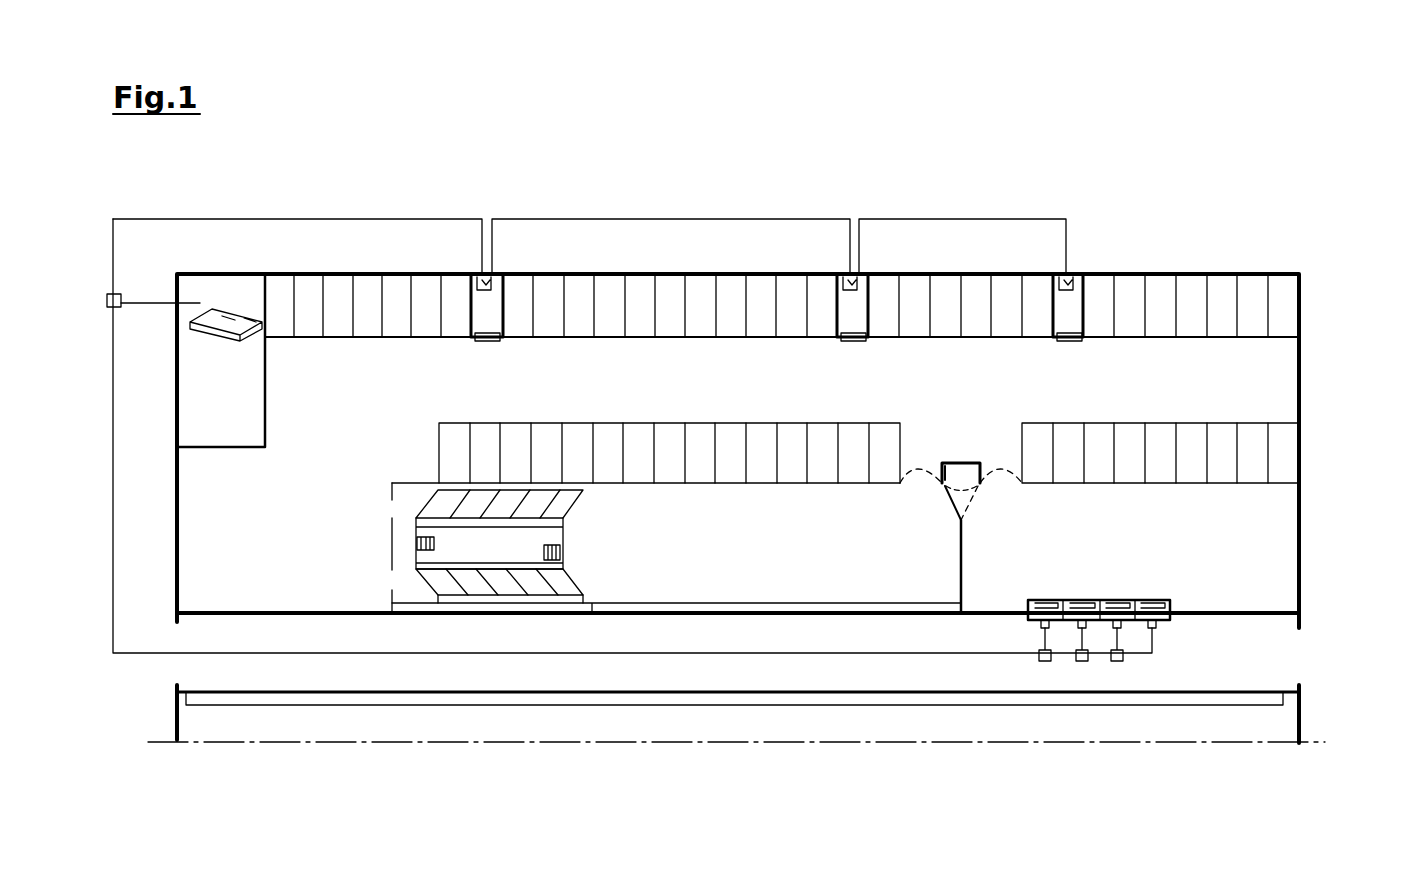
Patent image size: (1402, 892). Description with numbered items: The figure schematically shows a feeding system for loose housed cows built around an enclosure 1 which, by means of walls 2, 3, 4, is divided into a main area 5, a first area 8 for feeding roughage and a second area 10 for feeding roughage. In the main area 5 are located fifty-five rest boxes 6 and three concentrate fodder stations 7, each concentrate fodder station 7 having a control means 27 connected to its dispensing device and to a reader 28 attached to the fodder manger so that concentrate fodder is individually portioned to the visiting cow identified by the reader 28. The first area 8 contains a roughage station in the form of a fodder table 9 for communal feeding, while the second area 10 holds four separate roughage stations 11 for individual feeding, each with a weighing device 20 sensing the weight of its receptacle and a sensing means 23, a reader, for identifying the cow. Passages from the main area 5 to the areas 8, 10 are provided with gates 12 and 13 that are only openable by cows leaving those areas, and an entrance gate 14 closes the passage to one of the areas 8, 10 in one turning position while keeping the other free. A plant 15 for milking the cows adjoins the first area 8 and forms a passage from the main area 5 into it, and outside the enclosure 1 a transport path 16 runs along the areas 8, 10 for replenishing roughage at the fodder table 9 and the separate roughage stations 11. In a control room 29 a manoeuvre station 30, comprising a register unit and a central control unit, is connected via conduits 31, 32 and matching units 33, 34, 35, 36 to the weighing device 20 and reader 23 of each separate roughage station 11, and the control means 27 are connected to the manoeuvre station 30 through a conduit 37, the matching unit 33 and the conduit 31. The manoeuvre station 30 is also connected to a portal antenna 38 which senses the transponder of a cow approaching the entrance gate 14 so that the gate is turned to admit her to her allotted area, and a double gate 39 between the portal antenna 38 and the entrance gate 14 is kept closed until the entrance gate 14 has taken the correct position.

The enclosure 1 is at (1299, 373).
The wall 2 is at (760, 485).
The wall 3 is at (1180, 485).
The wall 4 is at (958, 578).
The main area 5 is at (746, 396).
The rest boxes 6 is at (1247, 286).
The concentrate fodder stations 7 is at (487, 300).
The first area 8 is at (776, 578).
The fodder table 9 is at (862, 608).
The second area 10 is at (1130, 563).
The separate roughage stations 11 is at (1165, 608).
The gate 12 is at (905, 483).
The gate 13 is at (985, 485).
The entrance gate 14 is at (951, 505).
The milking plant 15 is at (455, 549).
The transport path 16 is at (1243, 668).
The weighing device 20 is at (1156, 626).
The sensing means (reader) 23 is at (1160, 600).
The control means 27 is at (505, 294).
The reader 28 is at (484, 341).
The control room 29 is at (234, 410).
The manoeuvre station 30 is at (218, 310).
The conduit 31 is at (155, 308).
The conduit 32 is at (113, 505).
The matching unit 33 is at (107, 296).
The matching unit 34 is at (1044, 661).
The matching unit 35 is at (1082, 661).
The matching unit 36 is at (1117, 661).
The conduit 37 is at (353, 219).
The portal antenna 38 is at (965, 463).
The double gate 39 is at (952, 463).